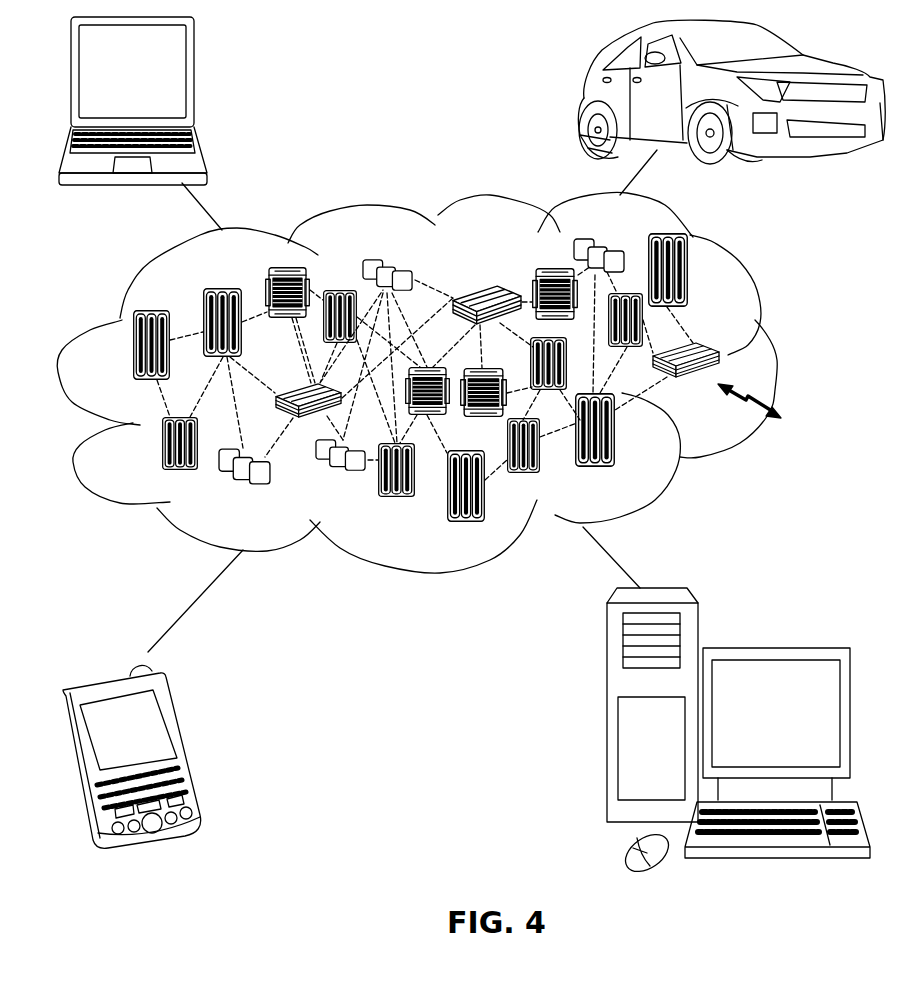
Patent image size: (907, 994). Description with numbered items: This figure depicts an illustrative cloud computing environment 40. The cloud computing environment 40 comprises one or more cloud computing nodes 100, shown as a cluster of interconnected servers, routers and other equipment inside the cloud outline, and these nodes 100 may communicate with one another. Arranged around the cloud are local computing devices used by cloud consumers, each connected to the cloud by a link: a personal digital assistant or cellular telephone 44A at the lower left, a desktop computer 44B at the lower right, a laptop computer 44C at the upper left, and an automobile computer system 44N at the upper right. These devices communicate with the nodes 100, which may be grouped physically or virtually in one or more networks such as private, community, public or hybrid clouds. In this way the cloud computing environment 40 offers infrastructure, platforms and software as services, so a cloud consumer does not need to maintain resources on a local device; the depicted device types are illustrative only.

The personal digital assistant (PDA) or cellular telephone 44A is at (183, 742).
The desktop computer 44B is at (772, 648).
The laptop computer 44C is at (194, 82).
The automobile computer system 44N is at (580, 95).
The cloud computing environment 40 is at (777, 357).
The cloud computing nodes 100 is at (775, 408).